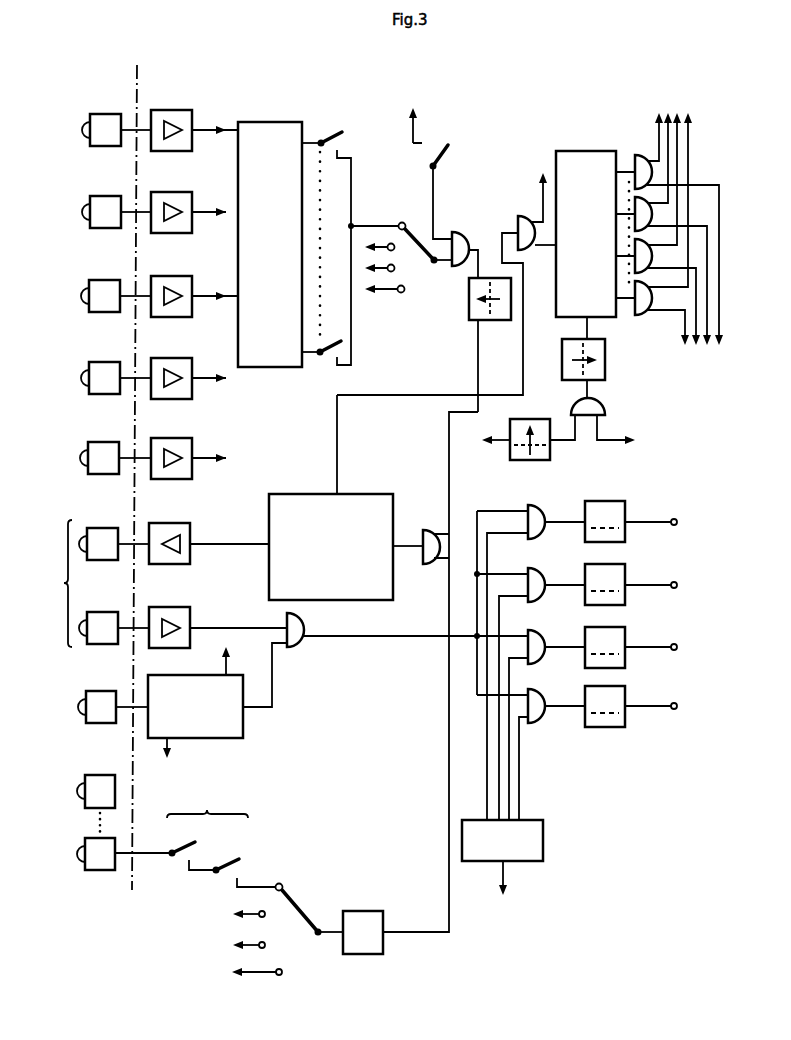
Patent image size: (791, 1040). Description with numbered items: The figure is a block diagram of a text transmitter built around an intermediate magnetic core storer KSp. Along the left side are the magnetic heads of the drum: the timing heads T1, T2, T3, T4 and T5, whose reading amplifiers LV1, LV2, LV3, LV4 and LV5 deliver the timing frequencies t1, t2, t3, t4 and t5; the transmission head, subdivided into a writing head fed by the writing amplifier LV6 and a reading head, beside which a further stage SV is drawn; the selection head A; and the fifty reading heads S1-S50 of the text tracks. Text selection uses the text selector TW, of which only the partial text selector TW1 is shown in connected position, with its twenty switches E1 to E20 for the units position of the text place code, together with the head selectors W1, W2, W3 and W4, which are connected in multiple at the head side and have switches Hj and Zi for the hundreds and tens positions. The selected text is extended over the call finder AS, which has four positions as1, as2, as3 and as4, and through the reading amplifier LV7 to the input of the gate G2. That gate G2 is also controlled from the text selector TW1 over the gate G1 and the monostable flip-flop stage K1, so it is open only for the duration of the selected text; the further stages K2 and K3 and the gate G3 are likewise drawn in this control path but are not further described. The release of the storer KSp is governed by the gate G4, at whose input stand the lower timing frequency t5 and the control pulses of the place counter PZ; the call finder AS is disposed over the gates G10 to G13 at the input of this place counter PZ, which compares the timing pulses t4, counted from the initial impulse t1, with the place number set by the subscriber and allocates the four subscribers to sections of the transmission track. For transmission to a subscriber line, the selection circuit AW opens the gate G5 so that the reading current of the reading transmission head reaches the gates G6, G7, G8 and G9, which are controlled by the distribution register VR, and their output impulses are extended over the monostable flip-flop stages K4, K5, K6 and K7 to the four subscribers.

The magnetic head T1 is at (116, 120).
The magnetic head T2 is at (116, 203).
The magnetic head T3 is at (116, 288).
The magnetic head T4 is at (116, 369).
The magnetic head T5 is at (115, 451).
The reading amplifier LV1 is at (194, 120).
The reading amplifier LV2 is at (188, 204).
The reading amplifier LV3 is at (194, 288).
The reading amplifier LV4 is at (188, 368).
The reading amplifier LV5 is at (188, 448).
The writing amplifier LV6 is at (218, 618).
The reading amplifier LV7 is at (410, 683).
The text selector TW is at (290, 116).
The partial text selector TW1 is at (270, 244).
The switch E1 is at (322, 129).
The switch E20 is at (322, 337).
The call finder AS is at (367, 580).
The gate G1 is at (463, 244).
The gate G2 is at (430, 537).
The gate 3 G3 is at (592, 421).
The gate G4 is at (531, 211).
The gate G5 is at (407, 628).
The gate G6 is at (536, 651).
The gate G7 is at (542, 684).
The gate G8 is at (547, 715).
The gate G9 is at (550, 744).
The gate G10 is at (675, 229).
The gate G13 is at (660, 229).
The monostable flip-flop stage K1 is at (494, 337).
The flip-flop 2 K2 is at (516, 430).
The flip-flop 3 K3 is at (595, 368).
The monostable flip-flop stage K4 is at (640, 512).
The monostable flip-flop stage K5 is at (640, 576).
The monostable flip-flop stage K6 is at (640, 639).
The monostable flip-flop stage K7 is at (640, 699).
The place counter PZ is at (639, 229).
The intermediate magnetic core storer KSp is at (346, 547).
The transmit amplifier SV is at (209, 534).
The selection head A is at (113, 698).
The selection circuit AW is at (217, 700).
The distribution register VR is at (502, 857).
The reading heads S1-S50 is at (105, 822).
The switch Hj is at (181, 841).
The switch Zi is at (214, 854).
The head selector W1 is at (207, 802).
The head selector W2 is at (204, 915).
The head selector W3 is at (206, 945).
The head selector W4 is at (208, 972).
The call finder position as1 is at (346, 507).
The call finder position as2 is at (250, 905).
The call finder position as3 is at (248, 936).
The call finder position as4 is at (257, 964).
The timing frequency t1 is at (345, 270).
The timing frequency t2 is at (216, 203).
The timing frequency t3 is at (216, 289).
The timing frequency t4 is at (433, 630).
The timing frequency t5 is at (361, 467).